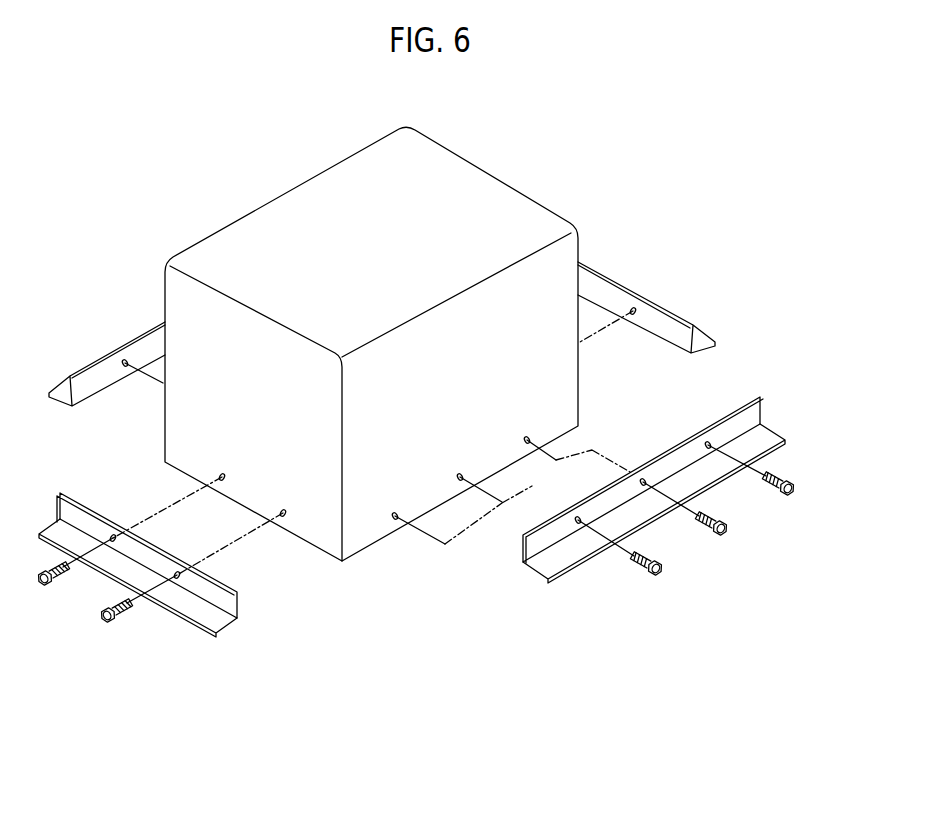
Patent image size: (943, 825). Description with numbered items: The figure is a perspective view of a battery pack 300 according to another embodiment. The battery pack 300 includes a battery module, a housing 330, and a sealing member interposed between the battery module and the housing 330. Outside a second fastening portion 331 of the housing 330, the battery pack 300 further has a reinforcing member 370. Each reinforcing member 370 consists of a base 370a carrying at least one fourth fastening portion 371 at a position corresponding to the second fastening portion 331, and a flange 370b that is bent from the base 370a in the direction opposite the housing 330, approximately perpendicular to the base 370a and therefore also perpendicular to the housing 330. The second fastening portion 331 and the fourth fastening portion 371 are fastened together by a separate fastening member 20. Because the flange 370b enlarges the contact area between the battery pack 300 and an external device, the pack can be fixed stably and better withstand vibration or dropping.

The battery pack 300 is at (437, 401).
The housing 330 is at (492, 172).
The second fastening portion 331 is at (283, 513).
The reinforcing member 370 is at (412, 461).
The base 370a is at (231, 603).
The flange 370b is at (218, 625).
The fourth fastening portion 371 is at (177, 575).
The fastening member 20 is at (100, 614).